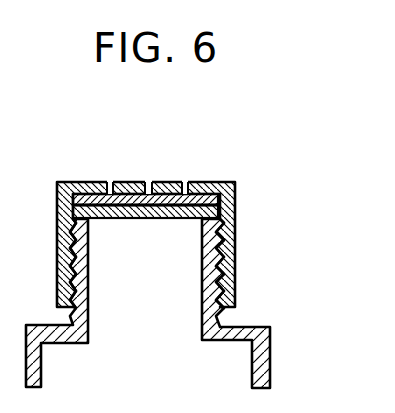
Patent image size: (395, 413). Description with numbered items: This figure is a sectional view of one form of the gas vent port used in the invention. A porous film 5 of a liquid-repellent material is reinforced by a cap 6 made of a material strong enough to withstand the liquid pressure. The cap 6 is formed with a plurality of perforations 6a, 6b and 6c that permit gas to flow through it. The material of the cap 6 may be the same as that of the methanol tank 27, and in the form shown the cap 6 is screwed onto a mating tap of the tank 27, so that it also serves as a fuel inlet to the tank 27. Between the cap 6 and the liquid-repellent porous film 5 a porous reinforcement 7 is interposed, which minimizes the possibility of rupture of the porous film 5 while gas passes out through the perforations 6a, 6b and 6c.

The porous film 5 is at (142, 218).
The cap 6 is at (227, 228).
The perforation 6a is at (111, 186).
The perforation 6b is at (149, 186).
The perforation 6c is at (186, 186).
The porous reinforcement 7 is at (218, 199).
The methanol tank 27 is at (183, 303).